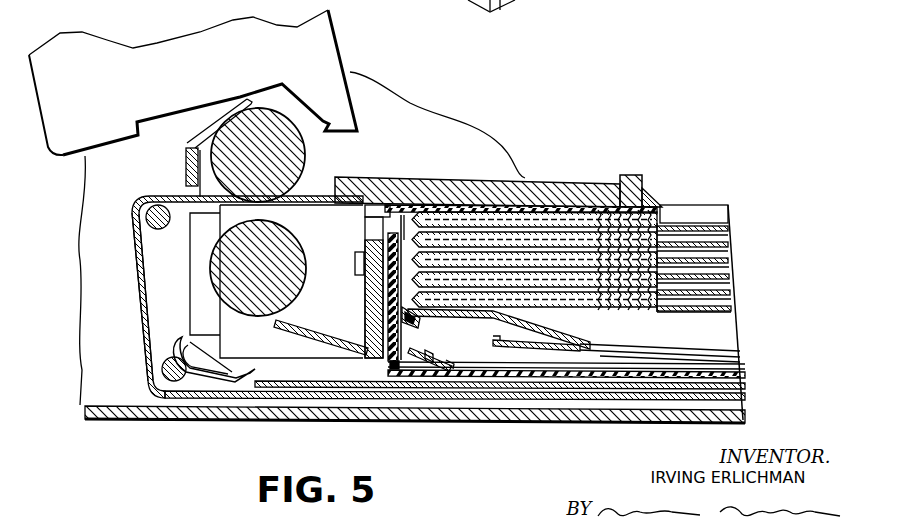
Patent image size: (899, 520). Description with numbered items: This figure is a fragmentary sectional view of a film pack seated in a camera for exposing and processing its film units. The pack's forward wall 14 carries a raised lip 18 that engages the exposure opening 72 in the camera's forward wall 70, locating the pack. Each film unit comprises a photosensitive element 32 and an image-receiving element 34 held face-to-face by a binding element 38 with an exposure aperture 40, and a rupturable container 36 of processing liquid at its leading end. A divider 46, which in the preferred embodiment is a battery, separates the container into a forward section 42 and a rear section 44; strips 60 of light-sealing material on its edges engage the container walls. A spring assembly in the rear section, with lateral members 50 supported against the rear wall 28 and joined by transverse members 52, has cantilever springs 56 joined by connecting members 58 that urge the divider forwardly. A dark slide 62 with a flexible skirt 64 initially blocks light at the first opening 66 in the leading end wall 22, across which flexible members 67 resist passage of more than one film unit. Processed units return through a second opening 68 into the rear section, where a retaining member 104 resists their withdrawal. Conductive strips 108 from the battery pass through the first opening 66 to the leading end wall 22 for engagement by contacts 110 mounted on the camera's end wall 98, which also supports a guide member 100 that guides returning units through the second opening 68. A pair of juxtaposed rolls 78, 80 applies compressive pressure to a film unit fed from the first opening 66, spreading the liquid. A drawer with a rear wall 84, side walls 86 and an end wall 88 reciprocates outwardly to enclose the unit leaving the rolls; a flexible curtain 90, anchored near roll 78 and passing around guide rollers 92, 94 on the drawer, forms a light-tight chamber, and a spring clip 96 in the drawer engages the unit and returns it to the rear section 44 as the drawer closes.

The forward wall 14 is at (459, 225).
The raised lip 18 is at (649, 205).
The leading end wall 22 is at (371, 293).
The rear wall 28 is at (545, 378).
The photosensitive element 32 is at (728, 236).
The image-receiving element 34 is at (731, 230).
The rupturable container 36 is at (567, 250).
The binding element 38 is at (615, 190).
The exposure aperture 40 is at (677, 234).
The forward section 42 is at (428, 248).
The rear section 44 is at (495, 357).
The divider 46 is at (713, 333).
The lateral members 50 is at (470, 370).
The transverse members 52 is at (430, 365).
The cantilever springs 56 is at (602, 343).
The connecting member 58 is at (494, 346).
The light-sealing strips 60 is at (409, 318).
The dark slide 62 is at (697, 215).
The skirt 64 is at (421, 224).
The first opening 66 is at (388, 230).
The flexible members 67 is at (390, 222).
The second opening 68 is at (389, 361).
The forward wall 70 is at (517, 190).
The exposure opening 72 is at (646, 190).
The roll 78 is at (307, 155).
The roll 80 is at (288, 293).
The rear wall 84 is at (248, 400).
The side walls 86 is at (160, 269).
The end wall 88 is at (143, 299).
The flexible curtain 90 is at (152, 245).
The guide roller 92 is at (148, 208).
The guide roller 94 is at (163, 365).
The spring clip 96 is at (199, 374).
The end wall 98 is at (371, 313).
The guide member 100 is at (312, 336).
The retaining member 104 is at (406, 362).
The conductive strips 108 is at (483, 317).
The contacts 110 is at (355, 263).